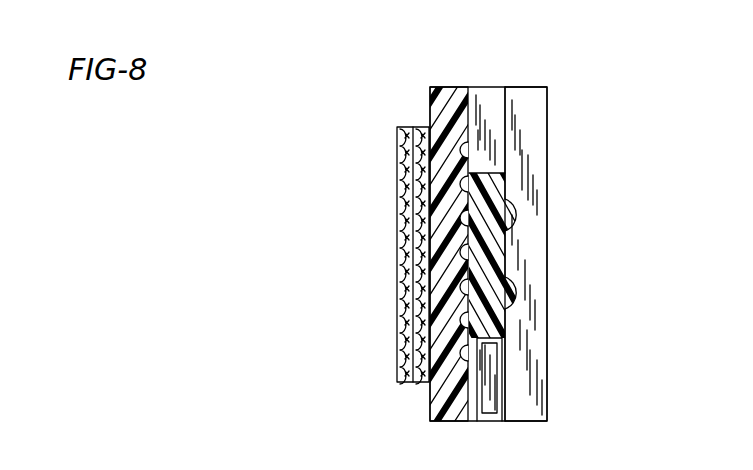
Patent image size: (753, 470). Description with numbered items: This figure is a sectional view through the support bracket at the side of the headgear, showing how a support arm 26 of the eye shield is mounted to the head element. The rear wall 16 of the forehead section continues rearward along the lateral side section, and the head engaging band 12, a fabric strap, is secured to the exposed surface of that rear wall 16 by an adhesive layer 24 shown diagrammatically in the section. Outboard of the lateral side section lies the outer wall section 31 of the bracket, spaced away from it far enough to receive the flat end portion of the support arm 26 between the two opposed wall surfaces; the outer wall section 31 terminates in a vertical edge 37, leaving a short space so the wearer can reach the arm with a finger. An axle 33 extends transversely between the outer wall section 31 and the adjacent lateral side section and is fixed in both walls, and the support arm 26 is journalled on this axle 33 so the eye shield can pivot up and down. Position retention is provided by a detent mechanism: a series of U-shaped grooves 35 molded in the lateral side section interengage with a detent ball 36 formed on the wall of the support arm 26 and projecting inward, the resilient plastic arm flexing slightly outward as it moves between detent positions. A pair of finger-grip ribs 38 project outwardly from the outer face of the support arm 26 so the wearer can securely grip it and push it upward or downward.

The head engaging band 12 is at (396, 162).
The rear wall 16 is at (445, 87).
The fabric backing 24 is at (430, 127).
The support arm 26 is at (493, 397).
The outer wall section 31 is at (547, 100).
The axle 33 is at (502, 362).
The U-shaped grooves 35 is at (468, 288).
The detent ball 36 is at (468, 251).
The vertical edge 37 is at (532, 146).
The finger-grip ribs 38 is at (518, 288).